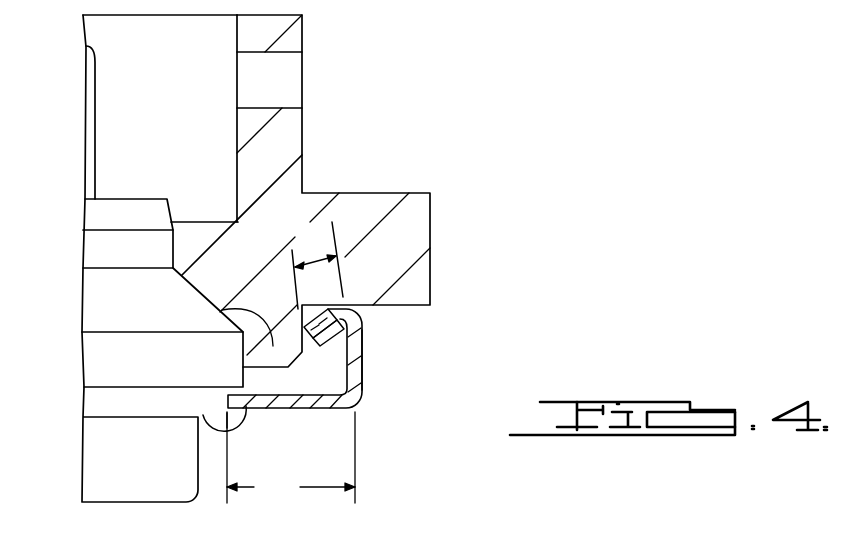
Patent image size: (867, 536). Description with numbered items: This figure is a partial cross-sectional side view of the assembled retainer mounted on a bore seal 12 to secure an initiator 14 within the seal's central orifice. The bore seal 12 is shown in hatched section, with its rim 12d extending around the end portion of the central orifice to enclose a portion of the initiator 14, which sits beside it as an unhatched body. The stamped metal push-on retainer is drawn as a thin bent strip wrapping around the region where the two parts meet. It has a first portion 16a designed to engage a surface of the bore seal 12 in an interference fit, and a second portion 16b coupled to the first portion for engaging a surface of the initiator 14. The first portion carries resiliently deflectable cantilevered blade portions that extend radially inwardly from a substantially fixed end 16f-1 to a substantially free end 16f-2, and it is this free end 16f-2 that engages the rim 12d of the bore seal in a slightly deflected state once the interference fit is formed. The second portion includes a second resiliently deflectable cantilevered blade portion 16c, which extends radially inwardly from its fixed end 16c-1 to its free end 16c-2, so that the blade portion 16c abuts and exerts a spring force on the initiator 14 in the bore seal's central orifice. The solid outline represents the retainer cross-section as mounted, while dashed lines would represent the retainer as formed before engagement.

The bore seal 12 is at (430, 213).
The rim 12d is at (222, 310).
The initiator 14 is at (112, 441).
The first portion 16a is at (291, 457).
The second portion 16b is at (312, 260).
The second resiliently deflectable cantilevered blade portion 16c is at (288, 412).
The fixed end 16c-1 is at (352, 405).
The free end 16c-2 is at (204, 416).
The fixed end 16f-1 is at (343, 322).
The free end 16f-2 is at (325, 350).